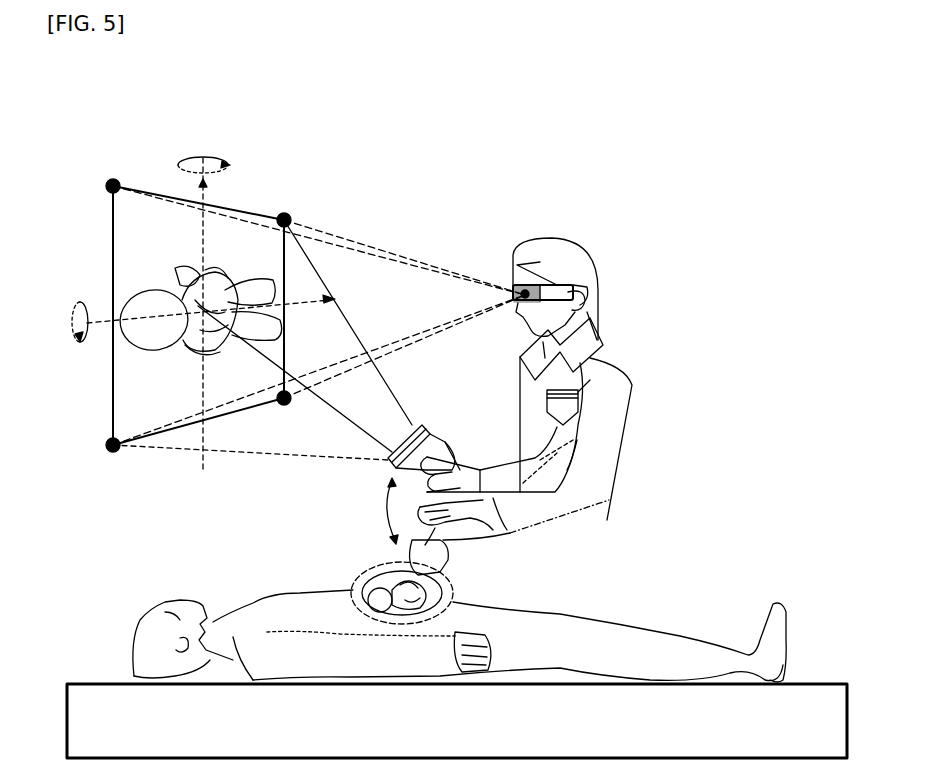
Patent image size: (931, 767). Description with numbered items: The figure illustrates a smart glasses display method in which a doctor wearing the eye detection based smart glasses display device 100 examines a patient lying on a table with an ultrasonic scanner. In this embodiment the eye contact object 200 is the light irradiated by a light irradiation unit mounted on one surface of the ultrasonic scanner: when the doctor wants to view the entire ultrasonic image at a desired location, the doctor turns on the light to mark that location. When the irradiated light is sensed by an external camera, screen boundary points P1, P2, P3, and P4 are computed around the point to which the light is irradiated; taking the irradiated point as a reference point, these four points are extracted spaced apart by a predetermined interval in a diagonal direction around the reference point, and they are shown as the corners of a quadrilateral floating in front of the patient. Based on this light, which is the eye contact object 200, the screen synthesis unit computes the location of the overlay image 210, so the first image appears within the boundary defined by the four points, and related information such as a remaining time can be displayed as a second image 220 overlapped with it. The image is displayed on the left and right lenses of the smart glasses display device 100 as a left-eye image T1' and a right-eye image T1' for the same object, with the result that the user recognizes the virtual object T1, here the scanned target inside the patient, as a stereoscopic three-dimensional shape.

The eye detection based smart glasses display device 100 is at (557, 285).
The eye contact object 200 is at (428, 428).
The overlay image 210 is at (255, 210).
The second image 220 is at (523, 284).
The screen boundary point P1 is at (113, 180).
The screen boundary point P2 is at (292, 214).
The screen boundary point P3 is at (112, 452).
The screen boundary point P4 is at (290, 402).
The virtual object T1 is at (382, 580).
The left-eye image / right-eye image T1' is at (257, 257).